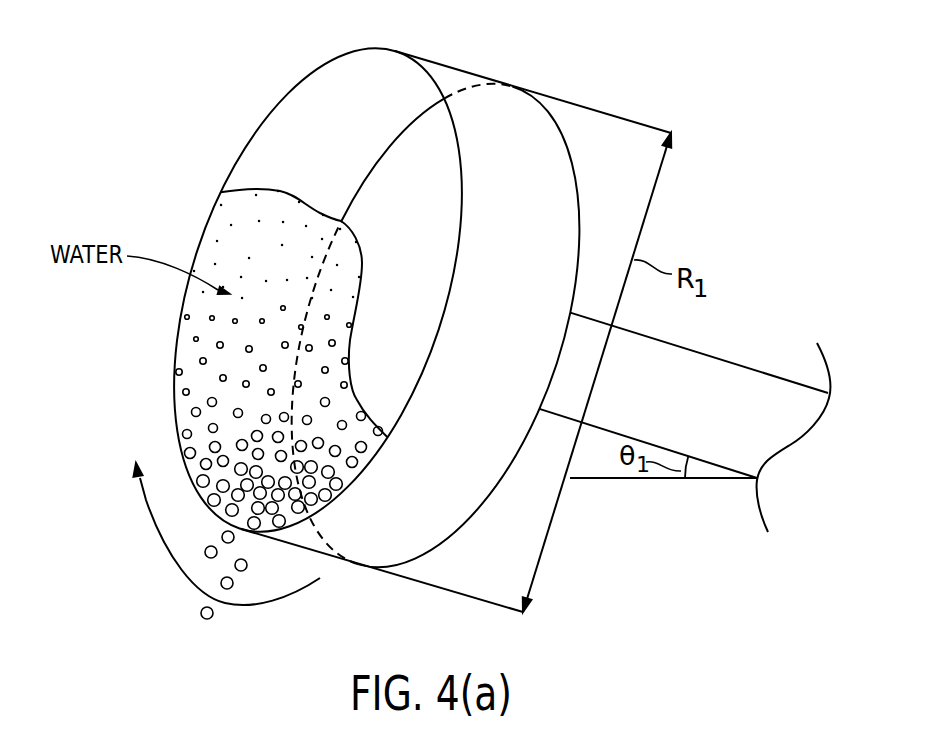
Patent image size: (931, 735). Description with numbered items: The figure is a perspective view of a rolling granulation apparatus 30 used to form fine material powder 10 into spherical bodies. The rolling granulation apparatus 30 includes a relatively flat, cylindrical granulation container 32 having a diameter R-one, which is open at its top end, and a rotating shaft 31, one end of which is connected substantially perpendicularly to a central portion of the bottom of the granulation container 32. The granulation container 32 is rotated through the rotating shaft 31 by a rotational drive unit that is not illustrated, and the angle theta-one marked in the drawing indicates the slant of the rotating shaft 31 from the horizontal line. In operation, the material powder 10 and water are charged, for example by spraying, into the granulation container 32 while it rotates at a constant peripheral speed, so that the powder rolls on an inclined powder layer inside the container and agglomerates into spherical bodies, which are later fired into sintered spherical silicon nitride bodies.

The rolling granulation apparatus 30 is at (205, 135).
The granulation container 32 is at (445, 80).
The rotating shaft 31 is at (710, 372).
The material powder 10 is at (196, 340).